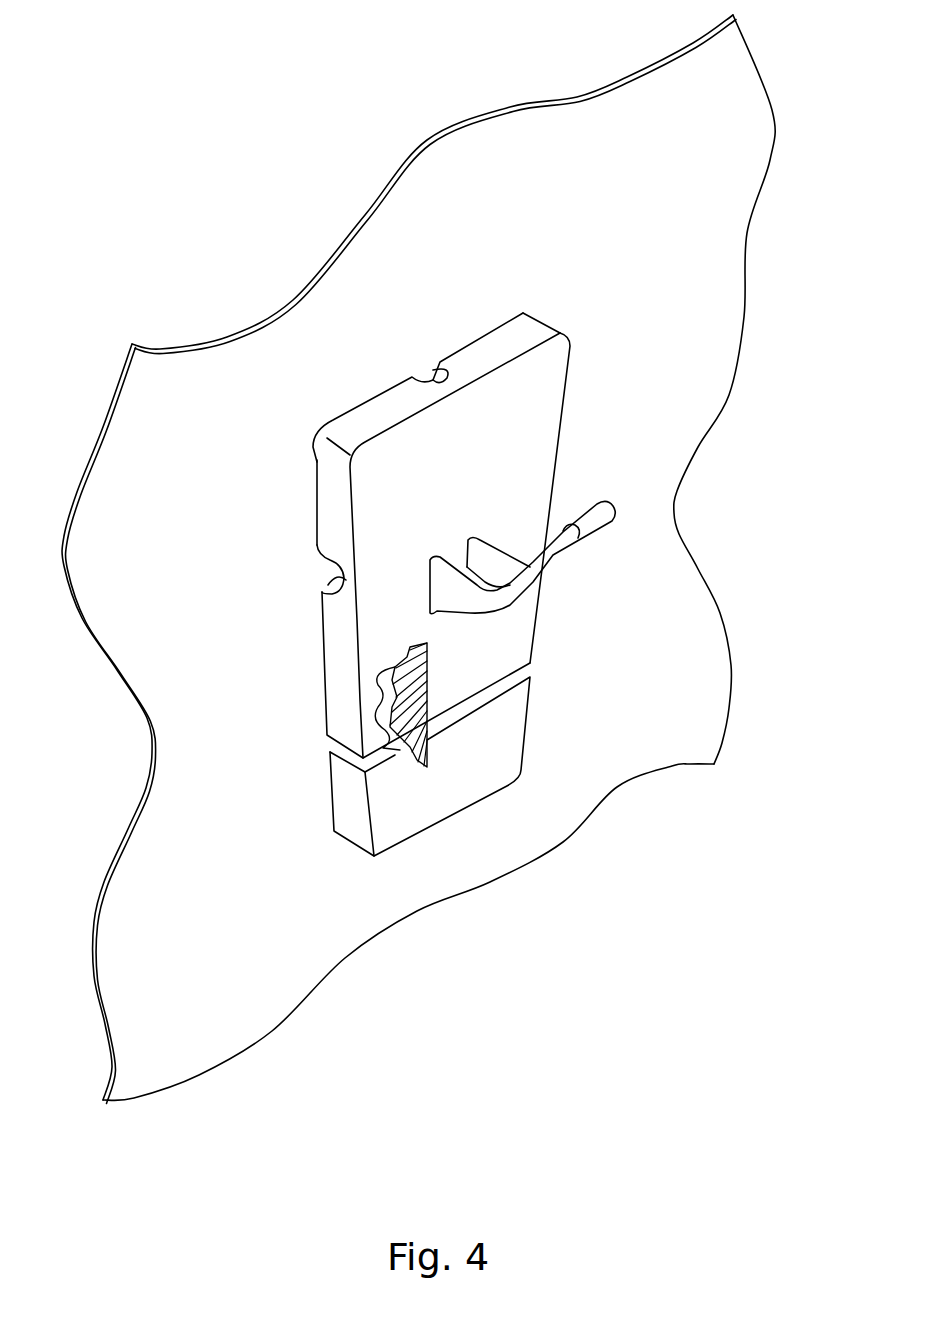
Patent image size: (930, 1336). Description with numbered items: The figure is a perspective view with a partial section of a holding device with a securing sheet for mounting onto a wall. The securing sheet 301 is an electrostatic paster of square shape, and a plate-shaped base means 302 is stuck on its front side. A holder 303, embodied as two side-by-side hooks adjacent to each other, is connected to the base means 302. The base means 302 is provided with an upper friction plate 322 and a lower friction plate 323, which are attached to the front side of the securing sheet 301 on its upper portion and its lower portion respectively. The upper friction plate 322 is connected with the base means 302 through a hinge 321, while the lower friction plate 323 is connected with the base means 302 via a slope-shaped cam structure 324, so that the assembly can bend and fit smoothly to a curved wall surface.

The securing sheet 301 is at (435, 120).
The base means 302 is at (333, 633).
The holder 303 is at (575, 555).
The hinge 321 is at (340, 588).
The upper friction plate 322 is at (330, 503).
The lower friction plate 323 is at (341, 787).
The slope-shaped cam structure 324 is at (373, 700).